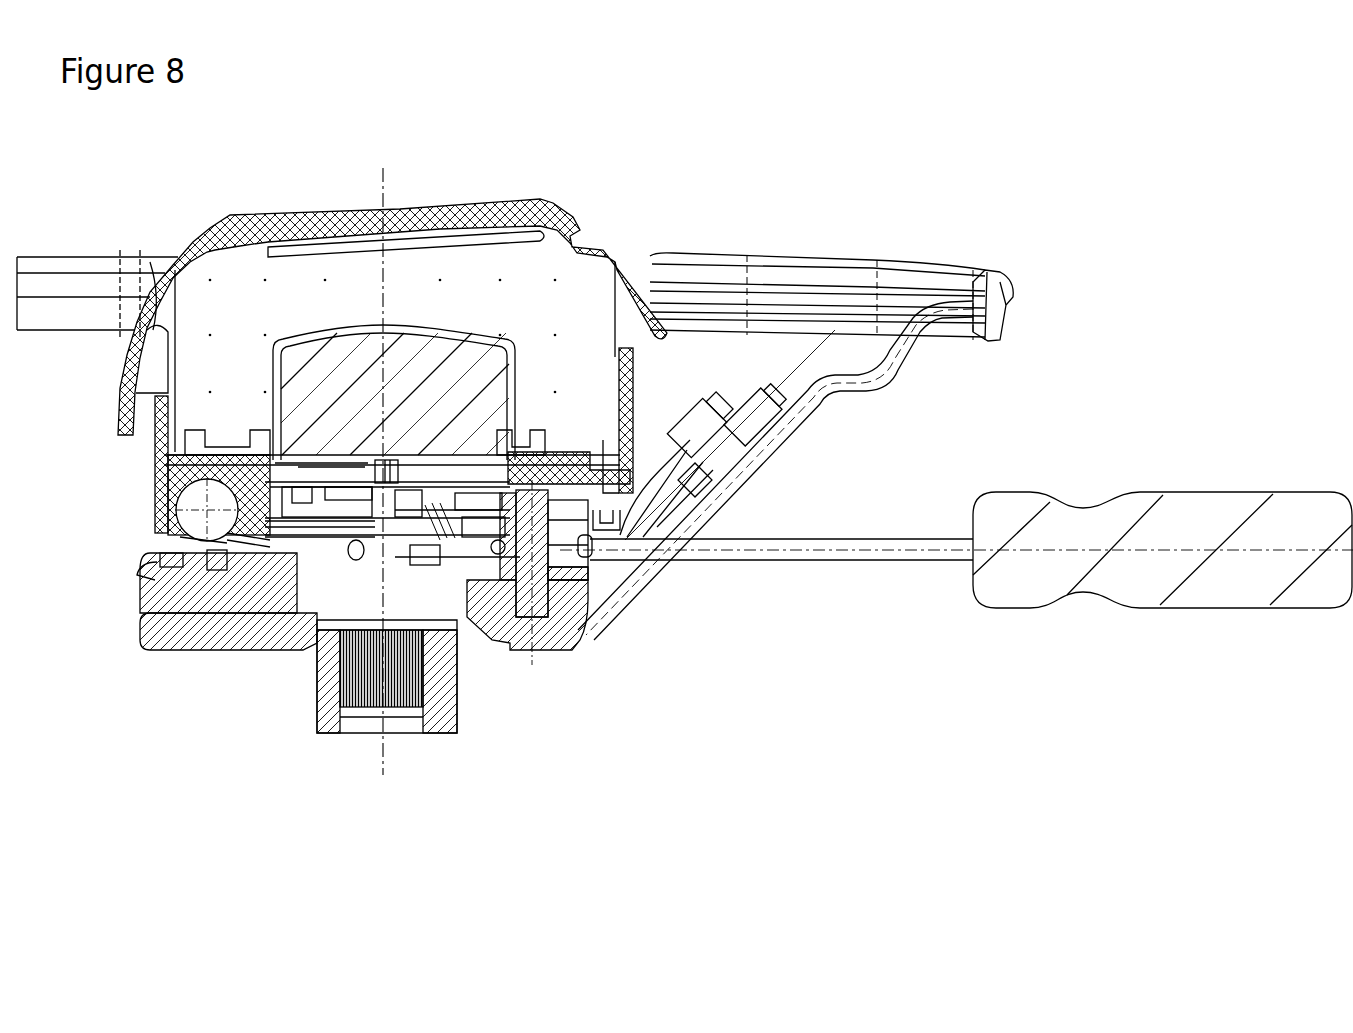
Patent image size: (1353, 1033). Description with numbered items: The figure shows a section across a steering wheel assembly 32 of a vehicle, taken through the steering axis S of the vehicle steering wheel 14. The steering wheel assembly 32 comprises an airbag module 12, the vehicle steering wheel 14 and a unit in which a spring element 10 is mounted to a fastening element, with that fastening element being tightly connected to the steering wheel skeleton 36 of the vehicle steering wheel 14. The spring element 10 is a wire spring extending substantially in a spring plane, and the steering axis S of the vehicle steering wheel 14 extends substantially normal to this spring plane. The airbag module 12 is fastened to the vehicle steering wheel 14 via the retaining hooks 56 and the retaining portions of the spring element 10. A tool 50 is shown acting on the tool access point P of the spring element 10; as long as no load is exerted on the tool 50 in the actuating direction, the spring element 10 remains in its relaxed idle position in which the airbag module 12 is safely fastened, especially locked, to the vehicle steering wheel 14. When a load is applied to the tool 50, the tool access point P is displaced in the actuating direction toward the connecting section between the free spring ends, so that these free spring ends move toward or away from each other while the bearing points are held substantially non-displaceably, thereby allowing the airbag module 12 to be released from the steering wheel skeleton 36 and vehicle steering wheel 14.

The spring element 10 is at (485, 563).
The airbag module 12 is at (552, 326).
The vehicle steering wheel 14 is at (788, 300).
The steering wheel assembly 32 is at (933, 143).
The steering wheel skeleton 36 is at (253, 640).
The tool 50 is at (1213, 520).
The retaining hooks 56 is at (372, 578).
The tool access point P is at (592, 547).
The steering axis S is at (381, 454).